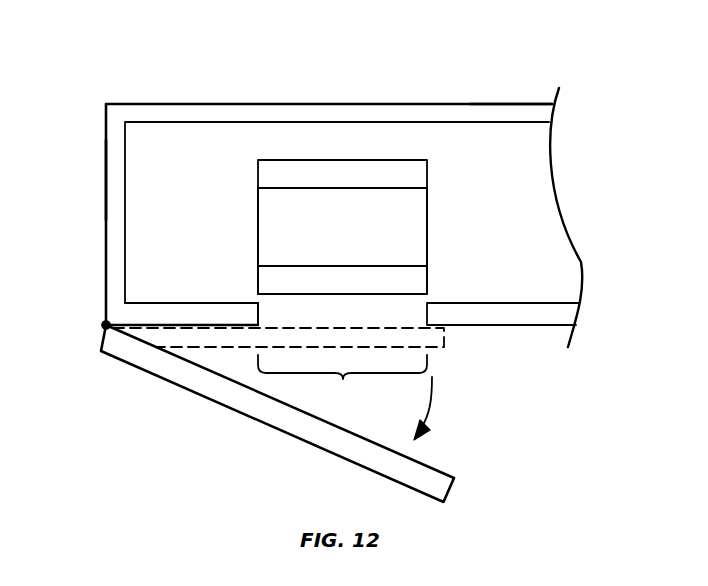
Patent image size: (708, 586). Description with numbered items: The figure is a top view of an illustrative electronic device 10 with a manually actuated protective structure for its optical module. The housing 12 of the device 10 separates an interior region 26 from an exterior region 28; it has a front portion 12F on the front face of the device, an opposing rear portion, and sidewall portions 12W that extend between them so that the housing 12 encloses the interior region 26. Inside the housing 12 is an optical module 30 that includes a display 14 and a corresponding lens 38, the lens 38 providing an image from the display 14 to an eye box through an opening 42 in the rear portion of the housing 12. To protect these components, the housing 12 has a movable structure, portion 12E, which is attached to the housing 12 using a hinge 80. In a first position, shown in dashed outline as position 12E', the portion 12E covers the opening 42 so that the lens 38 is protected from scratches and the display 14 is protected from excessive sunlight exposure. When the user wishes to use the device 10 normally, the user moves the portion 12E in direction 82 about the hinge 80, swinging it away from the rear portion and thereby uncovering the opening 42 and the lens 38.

The electronic device 10 is at (584, 56).
The housing 12 is at (216, 104).
The front portion 12F is at (512, 112).
The sidewall portions 12W is at (124, 152).
The movable portion 12E is at (277, 413).
The first position 12E' is at (326, 343).
The display 14 is at (343, 175).
The interior region 26 is at (170, 207).
The exterior region 28 is at (128, 70).
The optical module 30 is at (413, 225).
The lens 38 is at (418, 277).
The opening 42 is at (342, 378).
The hinge 80 is at (104, 325).
The direction 82 is at (434, 405).